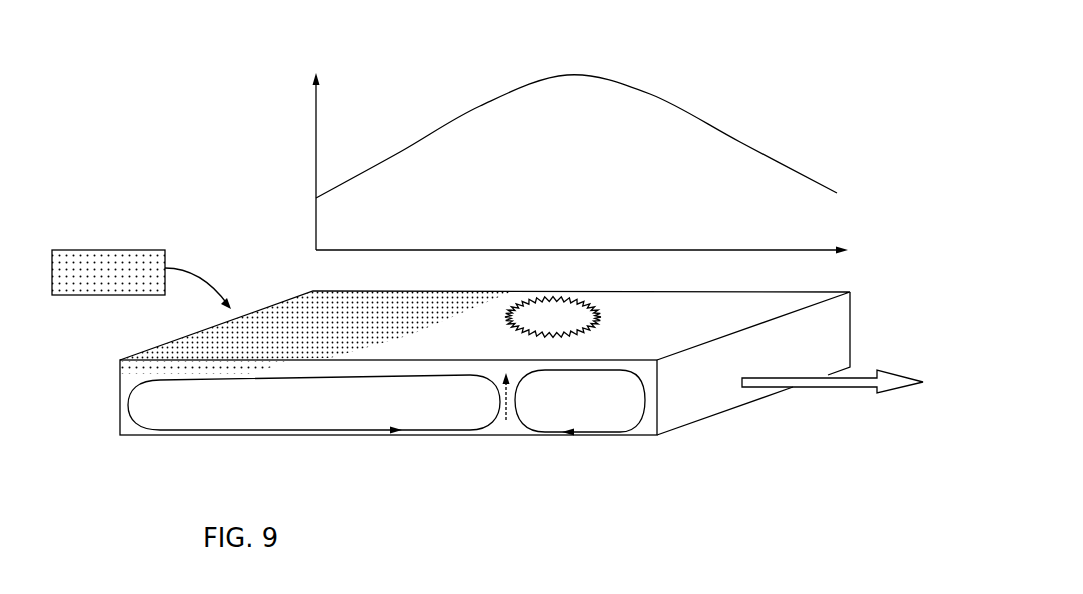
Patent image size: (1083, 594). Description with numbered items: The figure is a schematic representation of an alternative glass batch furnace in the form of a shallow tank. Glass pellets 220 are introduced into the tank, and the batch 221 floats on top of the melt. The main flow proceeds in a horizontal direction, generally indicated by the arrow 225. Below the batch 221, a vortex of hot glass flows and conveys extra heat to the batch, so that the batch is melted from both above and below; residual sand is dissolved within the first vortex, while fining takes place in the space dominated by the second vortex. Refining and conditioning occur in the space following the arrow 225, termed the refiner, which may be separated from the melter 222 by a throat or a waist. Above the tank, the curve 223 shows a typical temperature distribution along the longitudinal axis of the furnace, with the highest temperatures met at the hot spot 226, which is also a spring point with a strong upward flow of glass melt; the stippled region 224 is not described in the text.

The glass pellets 220 is at (108, 250).
The batch 221 is at (130, 390).
The melter 222 is at (500, 437).
The temperature distribution 223 is at (510, 163).
The solidified region 224 is at (417, 335).
The arrow indicating main flow direction 225 is at (820, 388).
The hot spot 226 is at (553, 317).